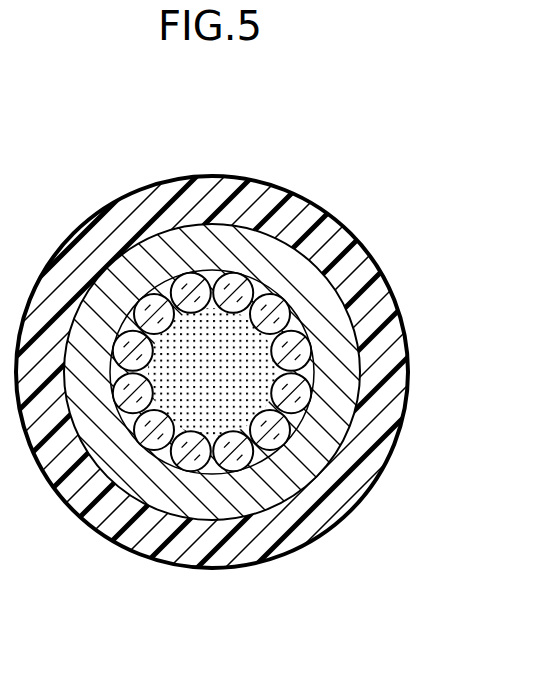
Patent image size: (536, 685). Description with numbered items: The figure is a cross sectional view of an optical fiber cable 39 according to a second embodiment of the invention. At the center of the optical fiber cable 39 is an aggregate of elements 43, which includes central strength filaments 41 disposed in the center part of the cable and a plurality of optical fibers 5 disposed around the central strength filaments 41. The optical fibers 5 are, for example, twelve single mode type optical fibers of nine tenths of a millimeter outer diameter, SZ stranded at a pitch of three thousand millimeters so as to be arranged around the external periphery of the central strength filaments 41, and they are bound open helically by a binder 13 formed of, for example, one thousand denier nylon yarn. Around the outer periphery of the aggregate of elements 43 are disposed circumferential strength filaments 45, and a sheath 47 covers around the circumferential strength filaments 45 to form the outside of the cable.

The optical fiber cable 39 is at (415, 187).
The sheath 47 is at (368, 292).
The binder 13 is at (133, 245).
The circumferential strength filaments 45 is at (307, 448).
The aggregate of elements 43 is at (194, 262).
The optical fibers 5 is at (304, 325).
The central strength filaments 41 is at (240, 385).